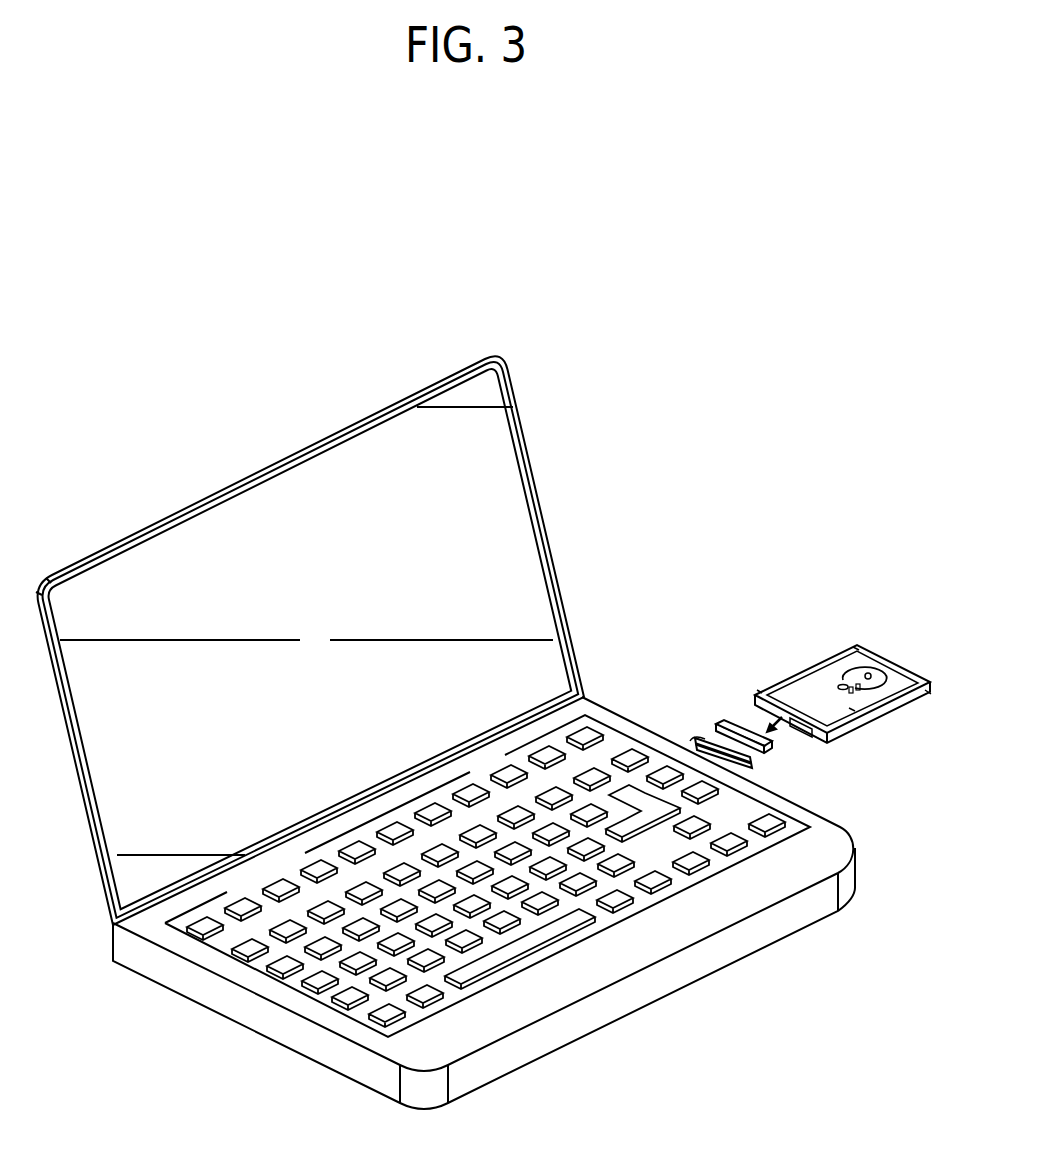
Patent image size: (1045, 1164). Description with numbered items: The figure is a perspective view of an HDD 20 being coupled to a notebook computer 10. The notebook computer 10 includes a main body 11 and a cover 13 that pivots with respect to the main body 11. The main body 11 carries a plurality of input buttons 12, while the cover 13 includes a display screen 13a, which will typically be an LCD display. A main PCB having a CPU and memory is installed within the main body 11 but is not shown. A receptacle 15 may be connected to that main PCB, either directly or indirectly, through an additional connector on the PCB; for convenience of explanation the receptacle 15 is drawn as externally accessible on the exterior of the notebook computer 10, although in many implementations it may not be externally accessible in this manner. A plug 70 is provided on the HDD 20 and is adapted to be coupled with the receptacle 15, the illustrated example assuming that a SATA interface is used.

The notebook computer 10 is at (228, 464).
The main body 11 is at (567, 1023).
The input buttons 12 is at (348, 1003).
The cover 13 is at (553, 555).
The display screen 13a is at (507, 503).
The receptacle 15 is at (718, 721).
The HDD 20 is at (795, 663).
The plug 70 is at (797, 730).